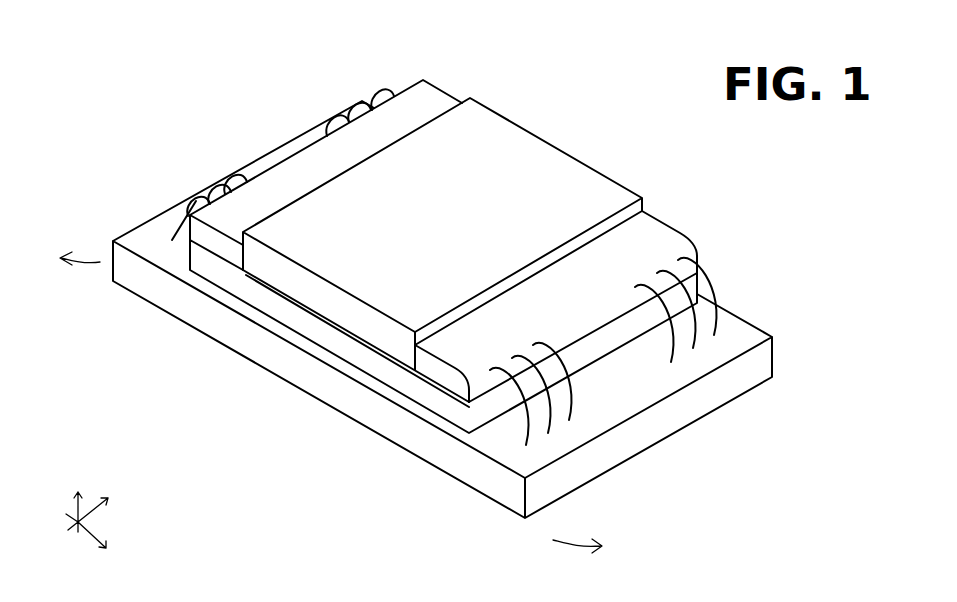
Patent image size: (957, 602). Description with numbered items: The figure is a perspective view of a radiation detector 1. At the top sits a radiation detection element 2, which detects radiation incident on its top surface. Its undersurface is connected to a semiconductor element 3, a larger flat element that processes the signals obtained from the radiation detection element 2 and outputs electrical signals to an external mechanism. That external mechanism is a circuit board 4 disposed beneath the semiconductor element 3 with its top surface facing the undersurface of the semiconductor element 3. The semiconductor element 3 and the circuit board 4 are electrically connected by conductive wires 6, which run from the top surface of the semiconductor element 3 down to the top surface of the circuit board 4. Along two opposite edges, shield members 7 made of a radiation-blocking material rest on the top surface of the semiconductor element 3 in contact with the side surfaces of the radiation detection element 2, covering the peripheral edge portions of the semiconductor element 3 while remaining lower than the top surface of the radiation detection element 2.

The radiation detector 1 is at (92, 93).
The radiation detection element 2 is at (525, 130).
The semiconductor element 3 is at (488, 424).
The circuit board 4 is at (250, 362).
The conductive wires 6 is at (186, 217).
The shield members 7 is at (428, 81).